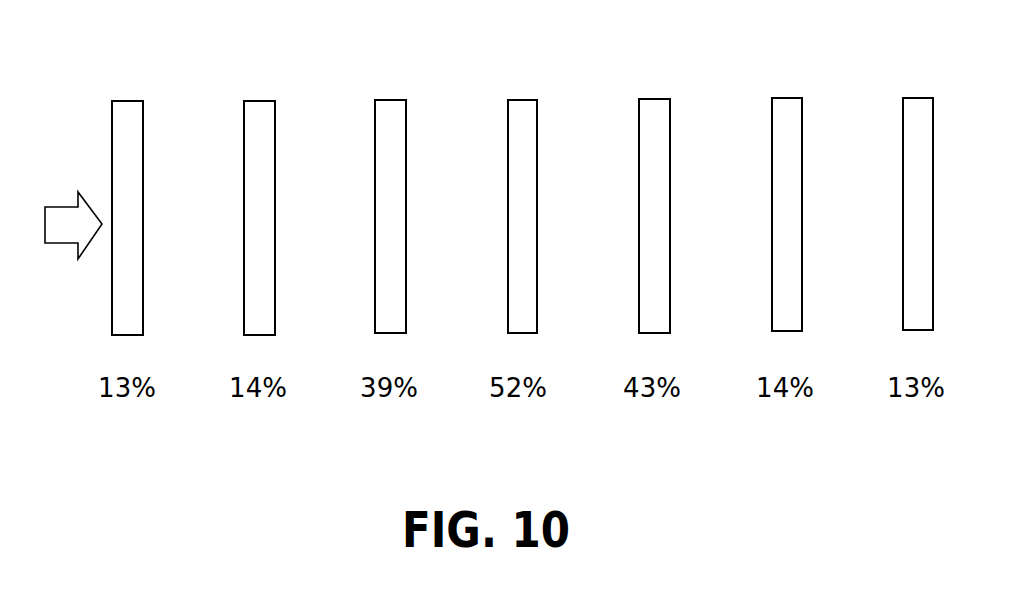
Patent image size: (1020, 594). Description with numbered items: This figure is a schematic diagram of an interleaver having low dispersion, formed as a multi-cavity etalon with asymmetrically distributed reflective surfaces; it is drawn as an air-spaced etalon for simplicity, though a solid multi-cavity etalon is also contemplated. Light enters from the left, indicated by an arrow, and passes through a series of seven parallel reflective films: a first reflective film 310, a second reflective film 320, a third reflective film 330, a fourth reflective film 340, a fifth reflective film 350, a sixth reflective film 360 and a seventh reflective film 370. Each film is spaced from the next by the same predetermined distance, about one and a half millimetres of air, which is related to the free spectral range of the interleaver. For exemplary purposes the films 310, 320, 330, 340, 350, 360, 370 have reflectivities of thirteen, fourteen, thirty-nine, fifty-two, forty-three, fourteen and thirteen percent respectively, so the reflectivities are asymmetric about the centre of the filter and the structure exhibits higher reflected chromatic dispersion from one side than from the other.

The first reflective film 310 is at (127, 99).
The second reflective film 320 is at (259, 99).
The third reflective film 330 is at (390, 98).
The fourth reflective film 340 is at (523, 98).
The fifth reflective film 350 is at (654, 97).
The sixth reflective film 360 is at (786, 96).
The seventh reflective film 370 is at (917, 96).